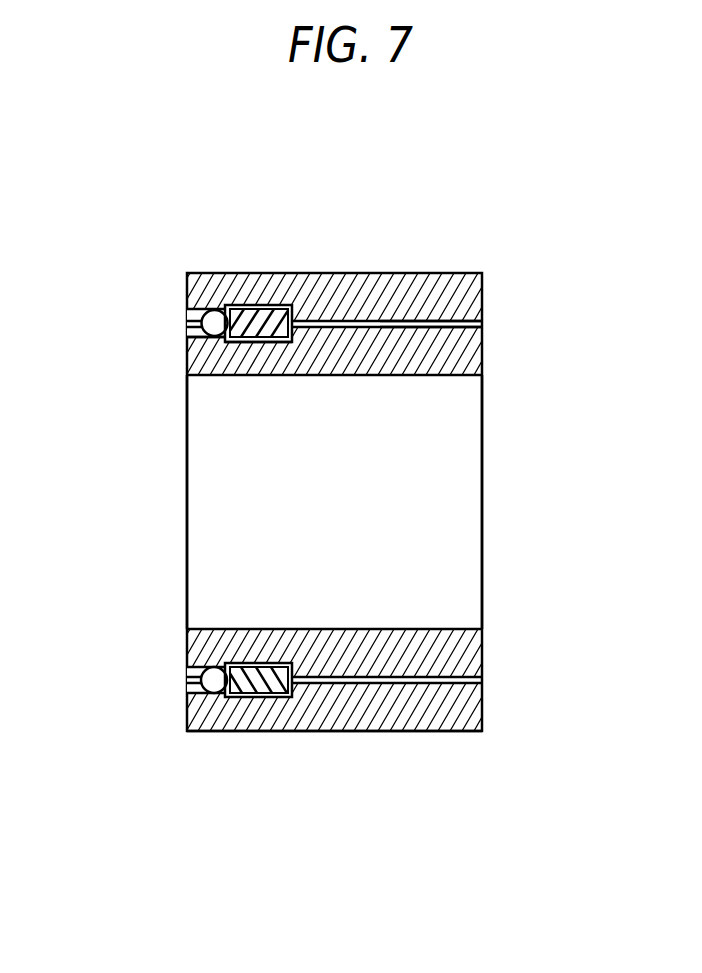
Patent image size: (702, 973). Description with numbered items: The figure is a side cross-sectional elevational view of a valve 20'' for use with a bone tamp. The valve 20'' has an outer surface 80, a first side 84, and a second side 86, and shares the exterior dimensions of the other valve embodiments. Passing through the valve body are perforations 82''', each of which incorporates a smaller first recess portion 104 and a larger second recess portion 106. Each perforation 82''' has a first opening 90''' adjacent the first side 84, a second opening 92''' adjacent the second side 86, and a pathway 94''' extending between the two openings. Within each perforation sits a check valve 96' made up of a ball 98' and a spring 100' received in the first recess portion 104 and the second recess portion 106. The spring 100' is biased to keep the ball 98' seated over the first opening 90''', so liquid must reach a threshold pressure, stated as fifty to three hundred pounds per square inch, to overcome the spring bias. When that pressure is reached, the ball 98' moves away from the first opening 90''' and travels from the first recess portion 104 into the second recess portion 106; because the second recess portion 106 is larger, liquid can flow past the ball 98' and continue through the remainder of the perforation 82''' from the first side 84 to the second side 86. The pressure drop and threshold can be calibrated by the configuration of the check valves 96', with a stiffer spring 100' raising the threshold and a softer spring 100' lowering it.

The valve 20'' is at (334, 560).
The outer surface 80 is at (392, 732).
The perforation 82''' is at (387, 502).
The first side 84 is at (187, 535).
The second side 86 is at (483, 555).
The first opening 90''' is at (139, 502).
The second opening 92''' is at (495, 291).
The pathway 94''' is at (425, 264).
The check valve 96' is at (177, 445).
The ball 98' is at (150, 501).
The spring 100' is at (258, 438).
The first recess portion 104 is at (200, 338).
The second recess portion 106 is at (252, 342).